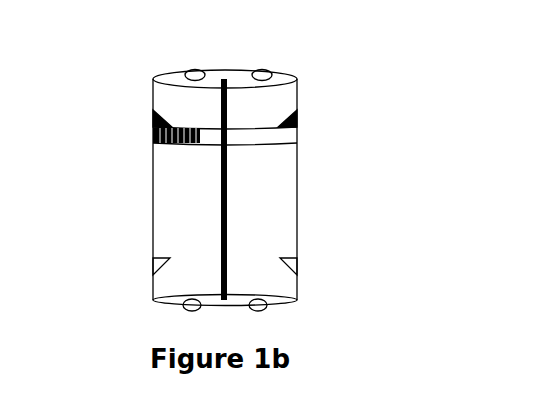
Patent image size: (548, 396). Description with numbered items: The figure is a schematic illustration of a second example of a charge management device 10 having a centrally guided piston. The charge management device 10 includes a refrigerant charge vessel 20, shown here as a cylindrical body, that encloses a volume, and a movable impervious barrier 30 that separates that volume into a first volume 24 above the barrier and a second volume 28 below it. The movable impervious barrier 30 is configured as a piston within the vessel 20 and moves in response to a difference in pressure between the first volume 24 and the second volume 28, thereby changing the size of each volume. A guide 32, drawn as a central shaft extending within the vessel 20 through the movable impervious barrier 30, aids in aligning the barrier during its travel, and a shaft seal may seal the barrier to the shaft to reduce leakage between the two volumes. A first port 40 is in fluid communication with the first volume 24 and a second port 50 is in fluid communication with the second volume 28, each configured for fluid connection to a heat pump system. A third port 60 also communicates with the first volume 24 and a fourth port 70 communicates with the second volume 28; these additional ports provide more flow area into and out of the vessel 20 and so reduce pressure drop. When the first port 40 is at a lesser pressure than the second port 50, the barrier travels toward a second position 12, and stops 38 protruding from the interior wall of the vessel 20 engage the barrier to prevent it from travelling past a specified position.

The charge management device 10 is at (125, 62).
The second position 12 is at (150, 136).
The refrigerant charge vessel 20 is at (152, 86).
The first volume 24 is at (212, 115).
The second volume 28 is at (212, 243).
The movable impervious barrier 30 is at (297, 137).
The guide 32 is at (227, 202).
The stop 38 is at (153, 267).
The first port 40 is at (200, 69).
The second port 50 is at (185, 312).
The third port 60 is at (265, 70).
The fourth port 70 is at (267, 310).